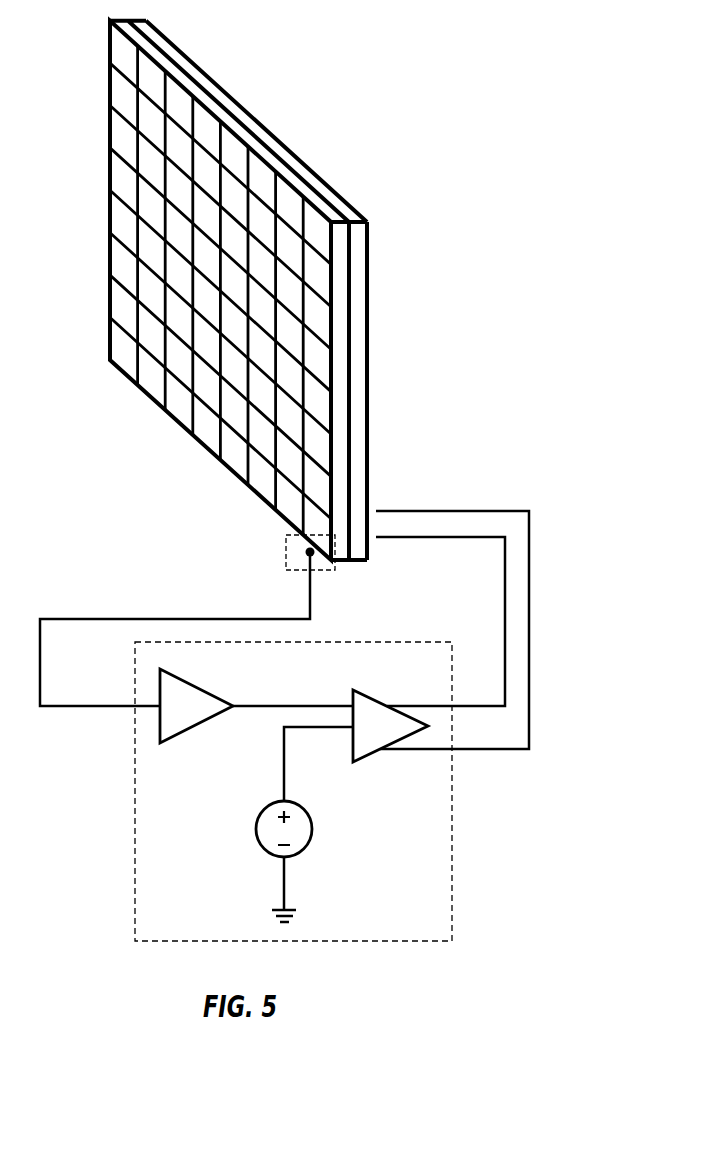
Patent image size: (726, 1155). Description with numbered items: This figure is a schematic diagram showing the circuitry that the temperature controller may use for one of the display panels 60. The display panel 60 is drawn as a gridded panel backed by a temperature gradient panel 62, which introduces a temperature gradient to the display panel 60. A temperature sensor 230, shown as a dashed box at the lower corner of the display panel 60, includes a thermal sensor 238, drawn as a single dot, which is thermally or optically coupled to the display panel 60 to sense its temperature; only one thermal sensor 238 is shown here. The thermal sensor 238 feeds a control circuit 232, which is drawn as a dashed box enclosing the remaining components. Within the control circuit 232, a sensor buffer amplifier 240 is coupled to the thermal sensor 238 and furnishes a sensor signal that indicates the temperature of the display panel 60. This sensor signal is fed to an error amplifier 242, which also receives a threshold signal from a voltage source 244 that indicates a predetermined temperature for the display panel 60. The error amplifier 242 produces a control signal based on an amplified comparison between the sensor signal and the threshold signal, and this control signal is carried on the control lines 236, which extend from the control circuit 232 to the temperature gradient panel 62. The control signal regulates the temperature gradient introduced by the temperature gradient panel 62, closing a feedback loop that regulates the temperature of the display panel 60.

The display panel 60 is at (110, 178).
The temperature gradient panel 62 is at (368, 395).
The thermal sensor 238 is at (306, 556).
The temperature sensor 230 is at (320, 570).
The control lines 236 is at (503, 642).
The control circuit 232 is at (136, 827).
The sensor buffer amplifier 240 is at (197, 685).
The error amplifier 242 is at (353, 690).
The voltage source 244 is at (257, 828).